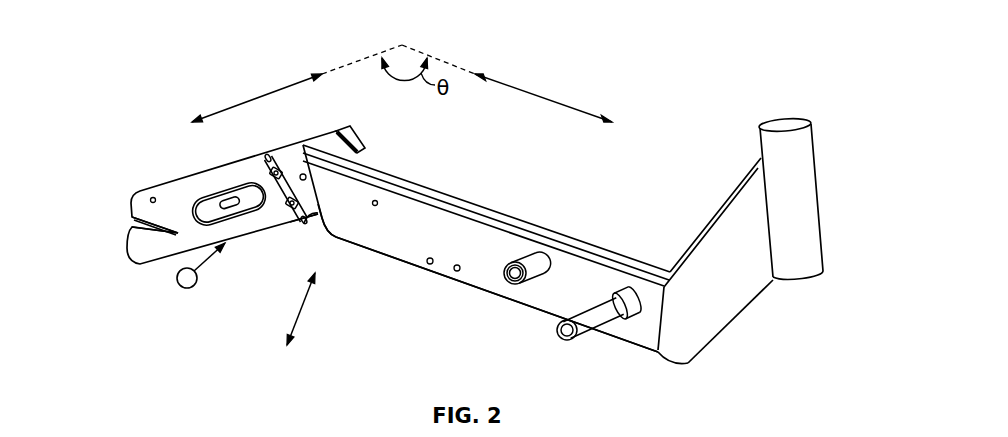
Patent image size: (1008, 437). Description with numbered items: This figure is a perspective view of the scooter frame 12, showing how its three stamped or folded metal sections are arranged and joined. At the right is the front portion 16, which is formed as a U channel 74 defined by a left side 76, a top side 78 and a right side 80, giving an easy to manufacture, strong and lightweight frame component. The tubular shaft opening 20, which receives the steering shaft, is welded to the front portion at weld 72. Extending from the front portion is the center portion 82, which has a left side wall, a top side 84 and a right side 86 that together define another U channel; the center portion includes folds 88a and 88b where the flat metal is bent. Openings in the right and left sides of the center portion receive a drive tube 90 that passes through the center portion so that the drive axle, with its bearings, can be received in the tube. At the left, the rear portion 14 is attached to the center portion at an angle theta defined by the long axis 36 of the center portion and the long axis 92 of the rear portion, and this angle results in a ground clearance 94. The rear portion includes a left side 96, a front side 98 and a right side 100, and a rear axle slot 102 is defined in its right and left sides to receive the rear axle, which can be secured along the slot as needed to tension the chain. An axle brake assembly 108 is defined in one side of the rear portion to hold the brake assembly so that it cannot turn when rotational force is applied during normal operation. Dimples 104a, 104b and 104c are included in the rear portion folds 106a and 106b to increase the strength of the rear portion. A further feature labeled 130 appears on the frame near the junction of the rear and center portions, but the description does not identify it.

The frame 12 is at (410, 246).
The rear portion 14 is at (208, 262).
The front portion 16 is at (712, 241).
The shaft opening 20 is at (820, 188).
The long axis 36 is at (525, 90).
The weld 72 is at (763, 247).
The U channel 74 is at (747, 316).
The left side 76 is at (725, 344).
The top side 78 is at (744, 178).
The right side 80 is at (676, 351).
The center portion 82 is at (497, 233).
The top side 84 is at (468, 203).
The right side 86 is at (487, 284).
The fold 88a is at (430, 182).
The fold 88b is at (398, 176).
The drive tube 90 is at (541, 268).
The long axis of rear portion 92 is at (232, 108).
The ground clearance 94 is at (305, 310).
The left side 96 is at (268, 156).
The front side 98 is at (318, 215).
The right side 100 is at (180, 190).
The rear axle slot 102 is at (130, 218).
The dimple 104a is at (268, 167).
The dimple 104b is at (308, 206).
The dimple 104c is at (362, 150).
The rear portion fold 106a is at (362, 148).
The rear portion fold 106b is at (300, 226).
The axle brake assembly 108 is at (224, 212).
The plate end edge 130 is at (337, 214).